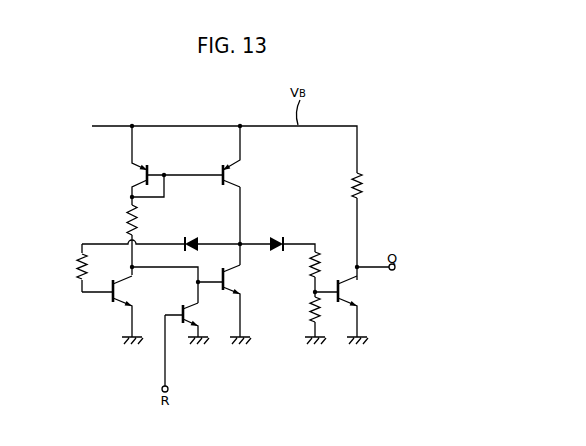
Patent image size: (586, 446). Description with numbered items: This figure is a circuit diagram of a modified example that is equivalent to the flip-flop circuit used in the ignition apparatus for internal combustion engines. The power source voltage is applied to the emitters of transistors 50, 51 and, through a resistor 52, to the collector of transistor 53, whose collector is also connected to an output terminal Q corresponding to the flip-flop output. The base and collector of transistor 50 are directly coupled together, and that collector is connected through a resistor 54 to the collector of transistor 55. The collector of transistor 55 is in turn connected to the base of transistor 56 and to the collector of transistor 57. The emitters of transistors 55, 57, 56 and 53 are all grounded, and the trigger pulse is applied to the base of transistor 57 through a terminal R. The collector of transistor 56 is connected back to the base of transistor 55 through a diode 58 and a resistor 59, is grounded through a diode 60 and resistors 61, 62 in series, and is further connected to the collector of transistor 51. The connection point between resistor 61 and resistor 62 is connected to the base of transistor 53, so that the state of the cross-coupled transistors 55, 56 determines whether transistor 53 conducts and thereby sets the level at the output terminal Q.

The transistor 50 is at (133, 174).
The transistor 51 is at (232, 177).
The resistor 52 is at (362, 187).
The transistor 53 is at (345, 290).
The resistor 54 is at (128, 220).
The transistor 55 is at (112, 300).
The transistor 56 is at (232, 284).
The transistor 57 is at (190, 313).
The diode 58 is at (192, 237).
The resistor 59 is at (78, 270).
The diode 60 is at (277, 237).
The resistor 61 is at (311, 268).
The resistor 62 is at (311, 315).